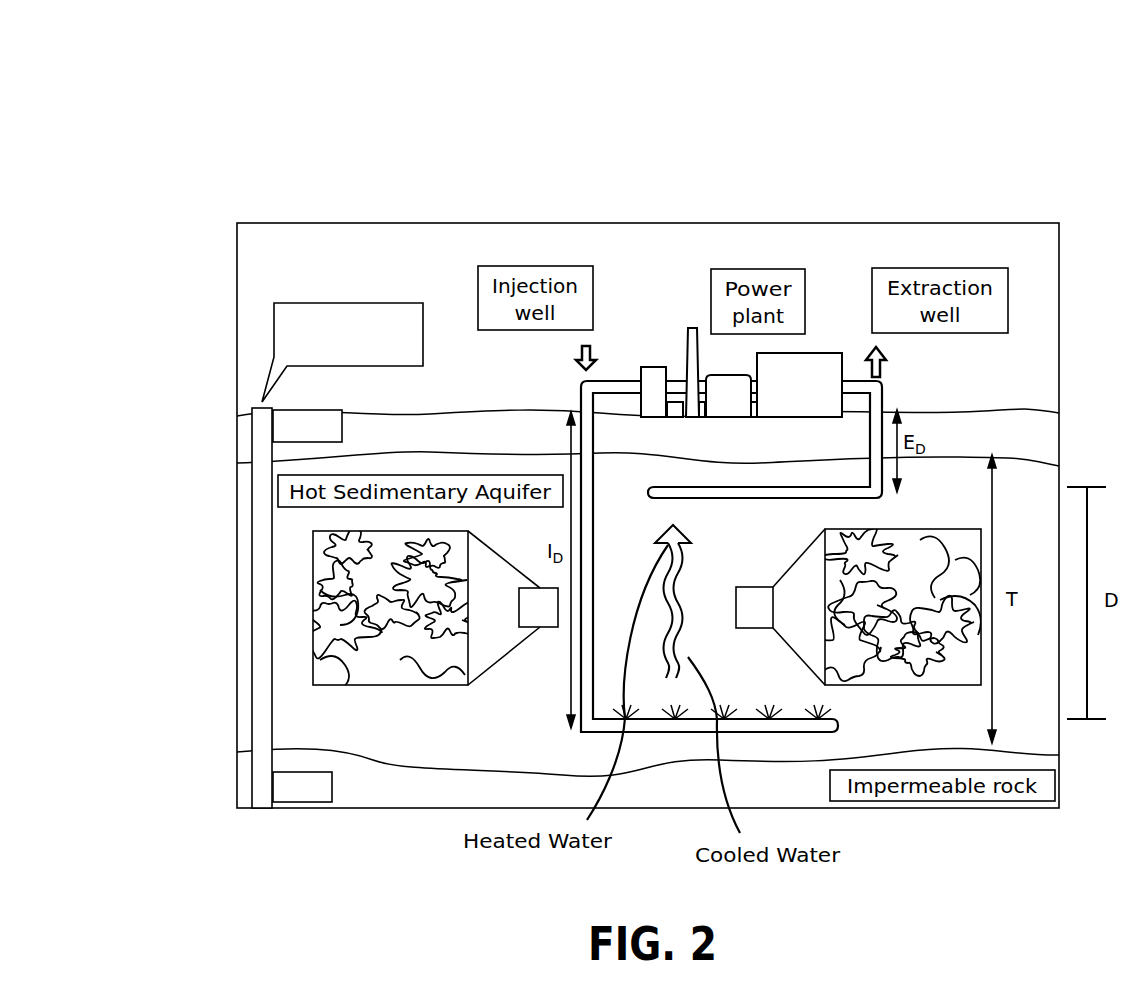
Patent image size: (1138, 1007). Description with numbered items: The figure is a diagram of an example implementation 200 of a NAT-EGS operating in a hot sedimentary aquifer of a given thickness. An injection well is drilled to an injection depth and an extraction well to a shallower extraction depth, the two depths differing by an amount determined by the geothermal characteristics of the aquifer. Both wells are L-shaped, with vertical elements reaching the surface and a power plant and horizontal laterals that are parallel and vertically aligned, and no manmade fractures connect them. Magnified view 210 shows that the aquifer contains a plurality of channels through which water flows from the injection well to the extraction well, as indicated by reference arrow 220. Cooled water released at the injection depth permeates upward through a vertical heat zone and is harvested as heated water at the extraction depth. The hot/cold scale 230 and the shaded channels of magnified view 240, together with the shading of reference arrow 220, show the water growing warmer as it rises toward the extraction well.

The example implementation 200 is at (138, 64).
The magnified view 210 is at (377, 685).
The reference arrow 220 is at (673, 675).
The hot/cold scale 230 is at (267, 772).
The magnified view 240 is at (872, 687).